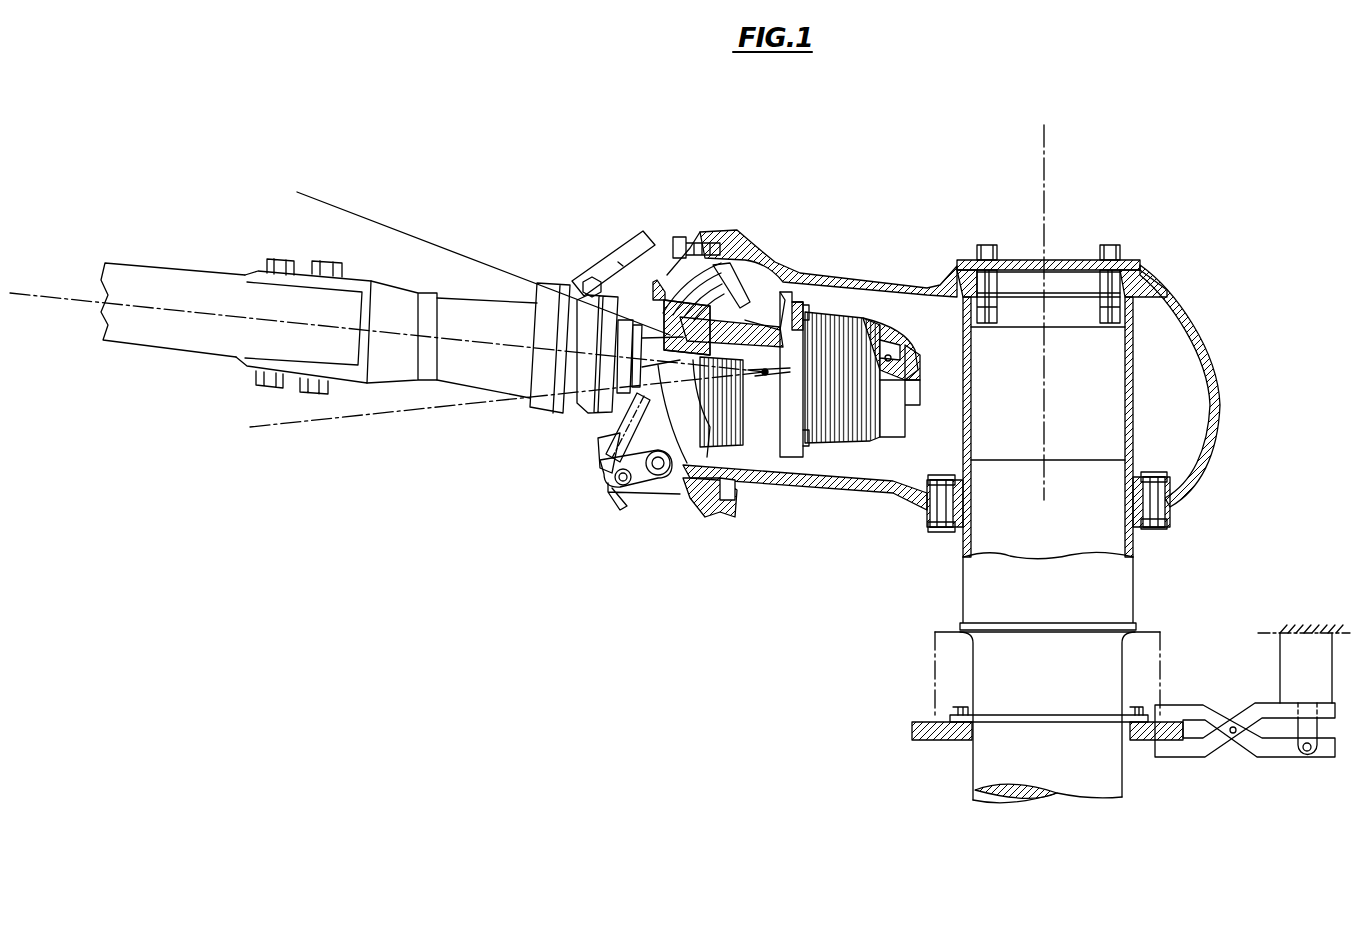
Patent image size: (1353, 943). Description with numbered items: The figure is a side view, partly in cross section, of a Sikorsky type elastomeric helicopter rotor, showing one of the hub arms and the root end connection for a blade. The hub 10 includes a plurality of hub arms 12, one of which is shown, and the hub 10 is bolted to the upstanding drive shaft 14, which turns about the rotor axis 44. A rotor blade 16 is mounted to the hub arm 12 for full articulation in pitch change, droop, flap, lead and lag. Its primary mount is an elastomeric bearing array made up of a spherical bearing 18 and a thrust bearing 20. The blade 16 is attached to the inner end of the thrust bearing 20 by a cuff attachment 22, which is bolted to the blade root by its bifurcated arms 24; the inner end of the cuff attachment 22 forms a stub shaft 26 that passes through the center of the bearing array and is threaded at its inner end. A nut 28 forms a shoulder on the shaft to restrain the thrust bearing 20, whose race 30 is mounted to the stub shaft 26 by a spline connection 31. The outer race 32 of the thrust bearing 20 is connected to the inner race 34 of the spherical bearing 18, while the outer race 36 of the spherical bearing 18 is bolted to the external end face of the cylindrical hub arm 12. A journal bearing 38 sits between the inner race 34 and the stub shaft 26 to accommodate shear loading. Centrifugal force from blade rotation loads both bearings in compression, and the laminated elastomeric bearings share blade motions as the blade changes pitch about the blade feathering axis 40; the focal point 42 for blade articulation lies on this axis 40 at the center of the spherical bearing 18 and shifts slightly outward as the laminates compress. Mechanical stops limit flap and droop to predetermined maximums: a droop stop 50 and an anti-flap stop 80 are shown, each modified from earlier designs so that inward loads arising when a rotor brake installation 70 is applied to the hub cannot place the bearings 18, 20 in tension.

The hub 10 is at (1219, 348).
The hub arm 12 is at (832, 275).
The drive shaft 14 is at (972, 592).
The rotor blade 16 is at (194, 284).
The spherical bearing 18 is at (753, 268).
The thrust bearing 20 is at (878, 308).
The cuff attachment 22 is at (501, 298).
The bifurcated arms 24 is at (368, 275).
The stub shaft 26 is at (660, 333).
The nut 28 is at (915, 358).
The race 30 is at (880, 330).
The spline connection 31 is at (902, 345).
The outer race 32 is at (800, 289).
The inner race 34 is at (721, 475).
The outer race 36 is at (700, 232).
The journal bearing 38 is at (757, 330).
The blade feathering axis 40 is at (60, 272).
The focal point 42 is at (764, 375).
The axis 44 is at (1048, 164).
The droop stop 50 is at (603, 487).
The rotor brake installation 70 is at (1210, 662).
The anti-flap stop 80 is at (634, 248).